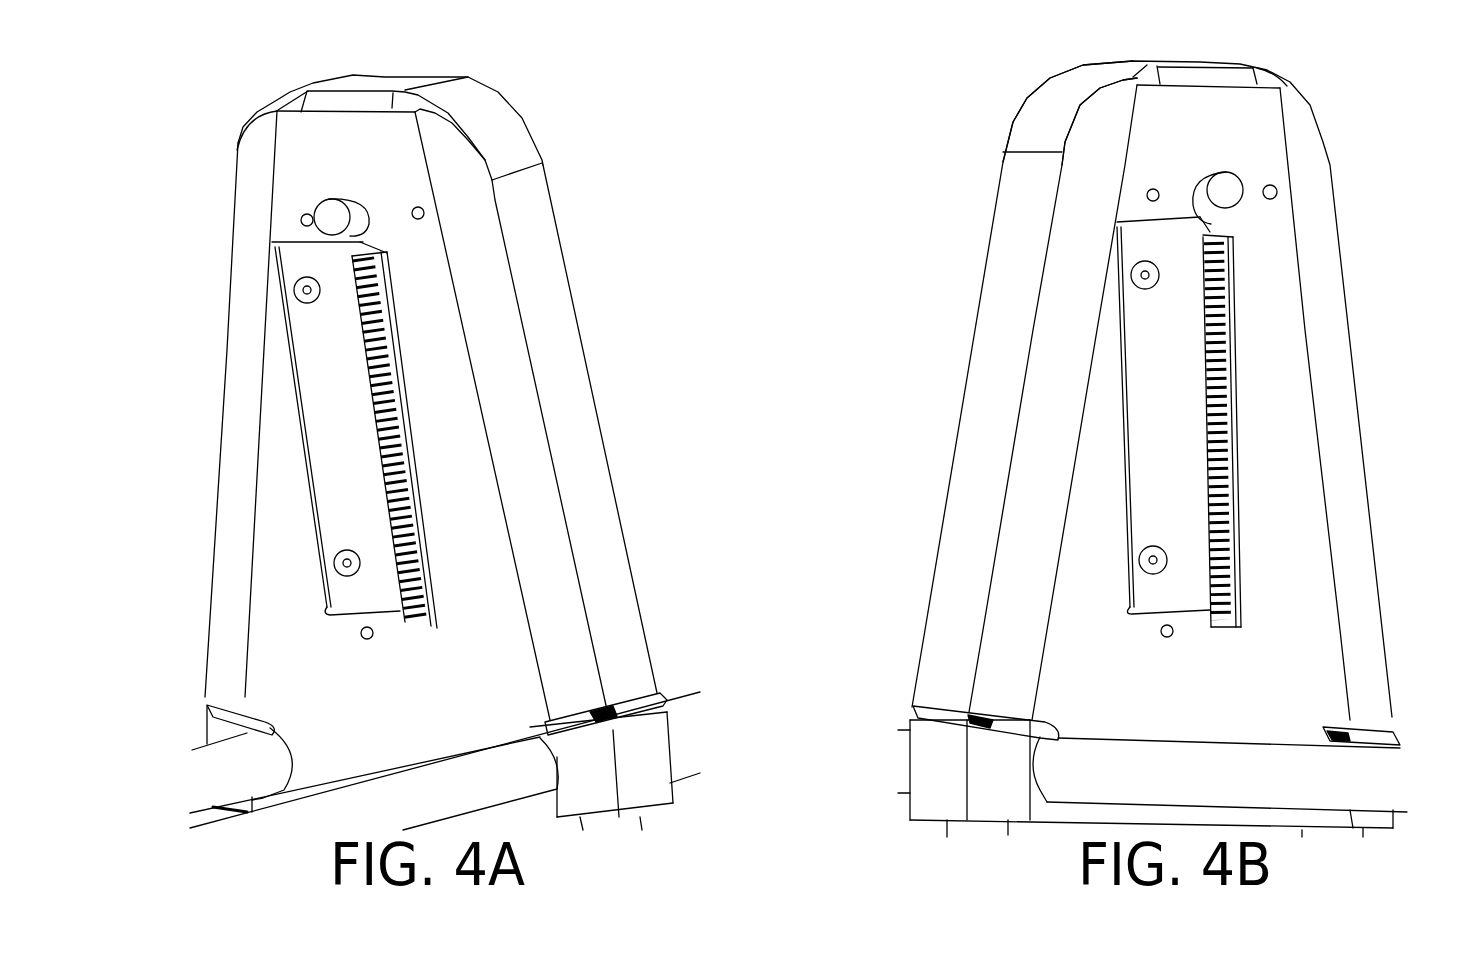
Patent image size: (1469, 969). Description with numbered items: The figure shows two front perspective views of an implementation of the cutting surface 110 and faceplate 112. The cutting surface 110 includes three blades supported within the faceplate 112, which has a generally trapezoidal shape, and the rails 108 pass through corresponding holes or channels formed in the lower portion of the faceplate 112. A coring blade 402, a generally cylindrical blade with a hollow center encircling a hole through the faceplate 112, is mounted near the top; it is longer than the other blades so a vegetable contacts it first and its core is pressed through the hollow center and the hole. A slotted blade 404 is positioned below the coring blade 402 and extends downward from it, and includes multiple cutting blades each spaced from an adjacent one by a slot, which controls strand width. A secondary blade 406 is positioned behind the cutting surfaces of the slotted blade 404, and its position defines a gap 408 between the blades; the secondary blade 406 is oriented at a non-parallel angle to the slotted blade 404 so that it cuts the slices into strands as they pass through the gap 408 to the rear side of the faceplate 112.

In FIG. 4A, the cutting surface 110 is at (258, 72).
In FIG. 4A, the faceplate 112 is at (498, 118).
In FIG. 4B, the faceplate 112 is at (1030, 118).
In FIG. 4A, the coring blade 402 is at (355, 205).
In FIG. 4B, the coring blade 402 is at (1206, 205).
In FIG. 4A, the gap 408 is at (361, 244).
In FIG. 4B, the gap 408 is at (1206, 228).
In FIG. 4A, the slotted blade 404 is at (382, 317).
In FIG. 4B, the slotted blade 404 is at (1222, 307).
In FIG. 4A, the secondary blade 406 is at (340, 403).
In FIG. 4B, the secondary blade 406 is at (1143, 420).
In FIG. 4A, the rails 108 is at (510, 772).
In FIG. 4B, the rails 108 is at (1137, 772).